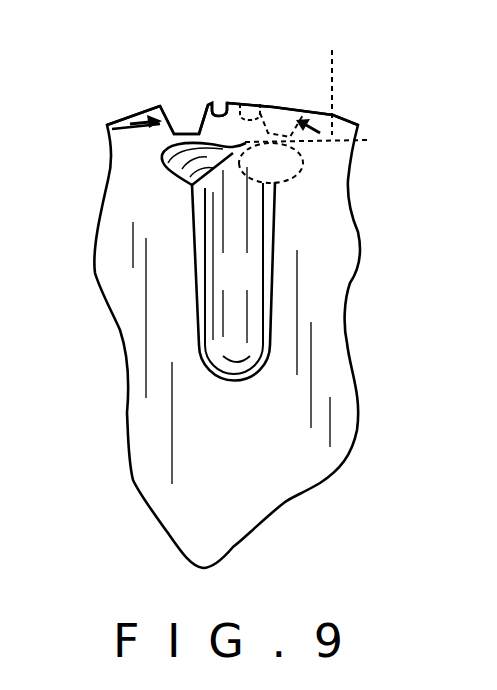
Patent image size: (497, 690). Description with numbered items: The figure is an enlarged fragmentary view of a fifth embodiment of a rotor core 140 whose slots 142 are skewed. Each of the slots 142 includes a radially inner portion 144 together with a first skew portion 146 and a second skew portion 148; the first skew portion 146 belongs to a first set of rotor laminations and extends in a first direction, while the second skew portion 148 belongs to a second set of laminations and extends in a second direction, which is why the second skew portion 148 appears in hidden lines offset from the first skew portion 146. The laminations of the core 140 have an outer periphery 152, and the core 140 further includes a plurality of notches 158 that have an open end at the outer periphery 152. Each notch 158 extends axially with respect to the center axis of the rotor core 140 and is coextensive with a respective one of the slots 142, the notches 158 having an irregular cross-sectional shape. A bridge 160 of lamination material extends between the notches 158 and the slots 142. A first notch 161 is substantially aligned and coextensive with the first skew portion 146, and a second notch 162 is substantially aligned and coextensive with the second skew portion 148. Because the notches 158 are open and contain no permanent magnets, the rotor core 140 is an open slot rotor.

The rotor core 140 is at (315, 307).
The slots 142 is at (195, 302).
The radially inner portion 144 is at (251, 281).
The first skew portion 146 is at (173, 172).
The second skew portion 148 is at (300, 174).
The outer periphery 152 is at (346, 122).
The notches 158 is at (118, 122).
The bridge 160 is at (177, 137).
The first notch 161 is at (223, 102).
The second notch 162 is at (243, 107).